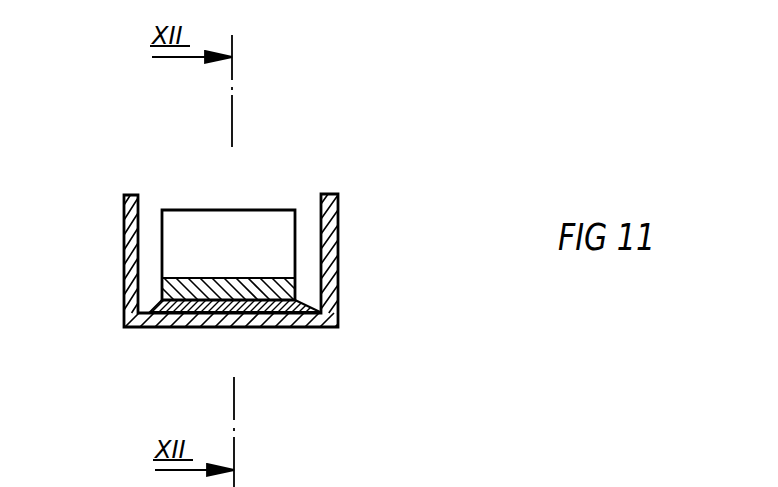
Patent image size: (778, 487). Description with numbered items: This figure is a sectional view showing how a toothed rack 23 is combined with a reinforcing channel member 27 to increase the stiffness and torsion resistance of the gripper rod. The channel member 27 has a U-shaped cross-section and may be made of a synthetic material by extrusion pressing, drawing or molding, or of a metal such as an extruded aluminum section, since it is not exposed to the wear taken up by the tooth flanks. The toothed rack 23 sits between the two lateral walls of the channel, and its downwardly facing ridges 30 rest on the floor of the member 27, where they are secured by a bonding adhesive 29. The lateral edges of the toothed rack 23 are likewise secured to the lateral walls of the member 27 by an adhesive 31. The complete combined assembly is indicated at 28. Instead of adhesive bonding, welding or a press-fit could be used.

The toothed rack 23 is at (223, 237).
The reinforcing channel member 27 is at (338, 259).
The assembly 28 is at (368, 177).
The bonding adhesive 29 is at (210, 308).
The downwardly facing ridges 30 is at (248, 292).
The adhesive 31 is at (148, 262).